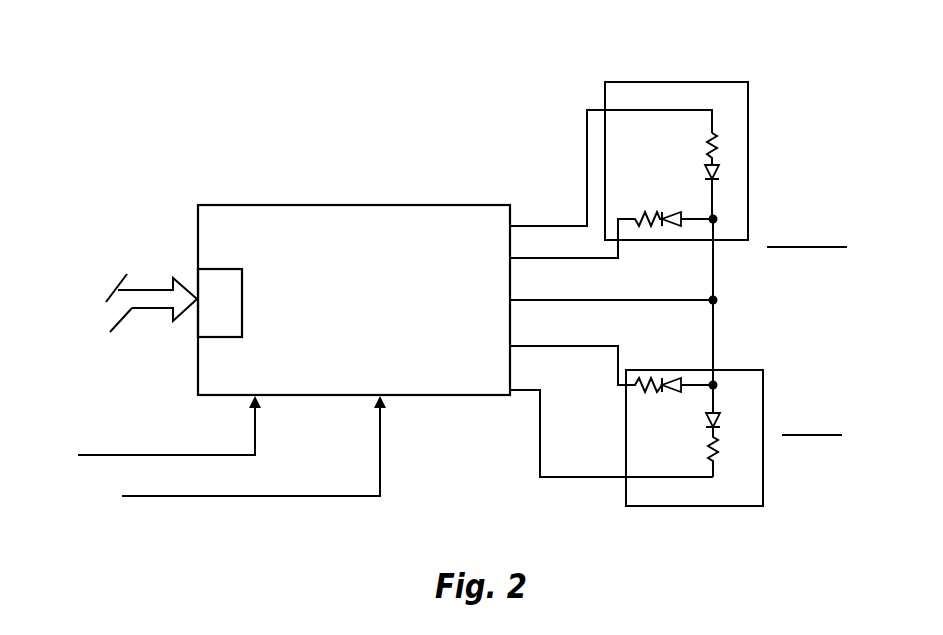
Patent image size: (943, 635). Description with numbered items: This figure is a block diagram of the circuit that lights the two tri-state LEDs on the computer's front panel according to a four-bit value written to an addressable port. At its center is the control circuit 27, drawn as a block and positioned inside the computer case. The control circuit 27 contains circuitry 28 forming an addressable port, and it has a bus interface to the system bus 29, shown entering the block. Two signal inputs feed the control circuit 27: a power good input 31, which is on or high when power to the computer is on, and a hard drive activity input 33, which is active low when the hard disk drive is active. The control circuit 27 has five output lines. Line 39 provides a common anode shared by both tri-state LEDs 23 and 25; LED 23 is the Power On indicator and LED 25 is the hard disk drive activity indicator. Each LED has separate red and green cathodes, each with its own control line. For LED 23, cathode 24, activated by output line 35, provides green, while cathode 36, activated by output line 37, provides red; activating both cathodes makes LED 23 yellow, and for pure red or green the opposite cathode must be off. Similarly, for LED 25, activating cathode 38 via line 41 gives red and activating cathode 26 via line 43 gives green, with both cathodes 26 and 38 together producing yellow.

The tri-state LED 23 is at (762, 99).
The cathode 24 is at (725, 176).
The tri-state LED 25 is at (779, 397).
The cathode 26 is at (728, 427).
The control circuit 27 is at (295, 184).
The addressable port circuitry 28 is at (212, 323).
The system bus 29 is at (157, 297).
The power good input 31 is at (102, 455).
The hard drive activity input 33 is at (133, 496).
The output line 35 is at (611, 168).
The cathode 36 is at (662, 228).
The output line 37 is at (620, 243).
The cathode 38 is at (656, 377).
The output line 39 is at (570, 300).
The output line 41 is at (588, 346).
The output line 43 is at (538, 418).